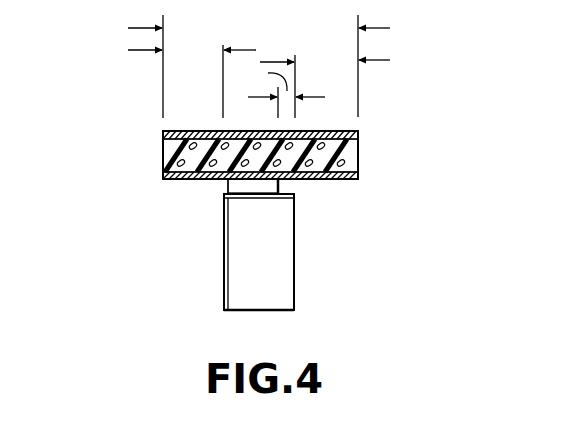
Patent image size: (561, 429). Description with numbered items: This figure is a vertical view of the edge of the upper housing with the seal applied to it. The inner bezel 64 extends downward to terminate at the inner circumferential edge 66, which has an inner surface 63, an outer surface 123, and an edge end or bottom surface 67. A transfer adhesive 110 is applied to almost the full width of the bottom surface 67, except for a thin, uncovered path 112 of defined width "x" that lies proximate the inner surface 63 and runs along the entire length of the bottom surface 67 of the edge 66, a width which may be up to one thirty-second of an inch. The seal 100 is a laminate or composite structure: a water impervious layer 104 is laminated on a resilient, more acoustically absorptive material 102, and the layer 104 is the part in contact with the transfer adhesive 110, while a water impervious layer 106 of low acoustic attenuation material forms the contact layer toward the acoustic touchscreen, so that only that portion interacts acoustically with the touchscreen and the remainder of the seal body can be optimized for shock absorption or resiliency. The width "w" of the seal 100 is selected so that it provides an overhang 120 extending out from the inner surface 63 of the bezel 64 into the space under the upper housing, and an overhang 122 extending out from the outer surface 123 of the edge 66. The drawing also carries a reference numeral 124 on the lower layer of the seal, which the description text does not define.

The seal 100 is at (372, 153).
The absorptive material 102 is at (163, 155).
The water impervious layer 104 is at (358, 177).
The water impervious layer 106 is at (358, 133).
The transfer adhesive 110 is at (227, 183).
The thin uncovered path 112 is at (293, 192).
The overhang 120 is at (285, 83).
The overhang 122 is at (113, 163).
The outer surface 123 is at (224, 248).
The bottom layer 124 is at (358, 158).
The inner surface 63 is at (295, 273).
The inner bezel 64 is at (295, 298).
The inner circumferential edge 66 is at (295, 247).
The bottom surface 67 is at (227, 193).